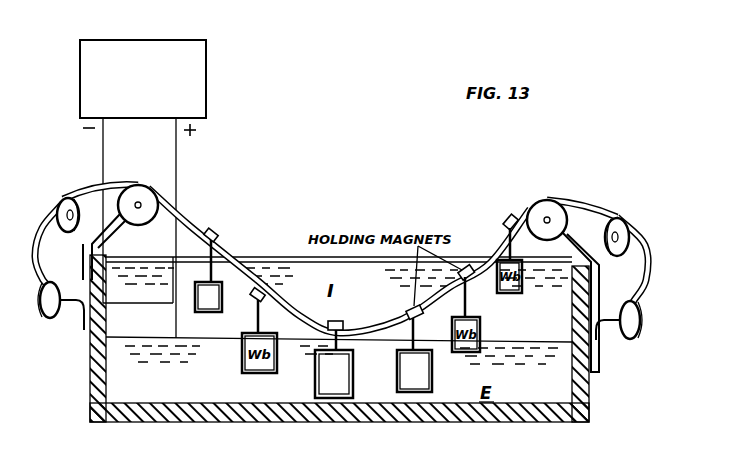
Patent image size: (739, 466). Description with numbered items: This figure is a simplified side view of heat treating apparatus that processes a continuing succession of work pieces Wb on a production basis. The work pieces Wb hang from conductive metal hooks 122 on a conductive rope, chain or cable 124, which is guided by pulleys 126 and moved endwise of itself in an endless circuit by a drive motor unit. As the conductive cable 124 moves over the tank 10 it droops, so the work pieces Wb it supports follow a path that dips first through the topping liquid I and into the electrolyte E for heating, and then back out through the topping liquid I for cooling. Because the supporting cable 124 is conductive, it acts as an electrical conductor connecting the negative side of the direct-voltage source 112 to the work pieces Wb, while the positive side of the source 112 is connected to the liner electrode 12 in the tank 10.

The tank 10 is at (586, 424).
The liner electrode 12 is at (587, 387).
The direct-voltage source 112 is at (206, 72).
The conductive metal hooks 122 is at (407, 312).
The conductive cable 124 is at (222, 252).
The pulleys 126 is at (130, 185).